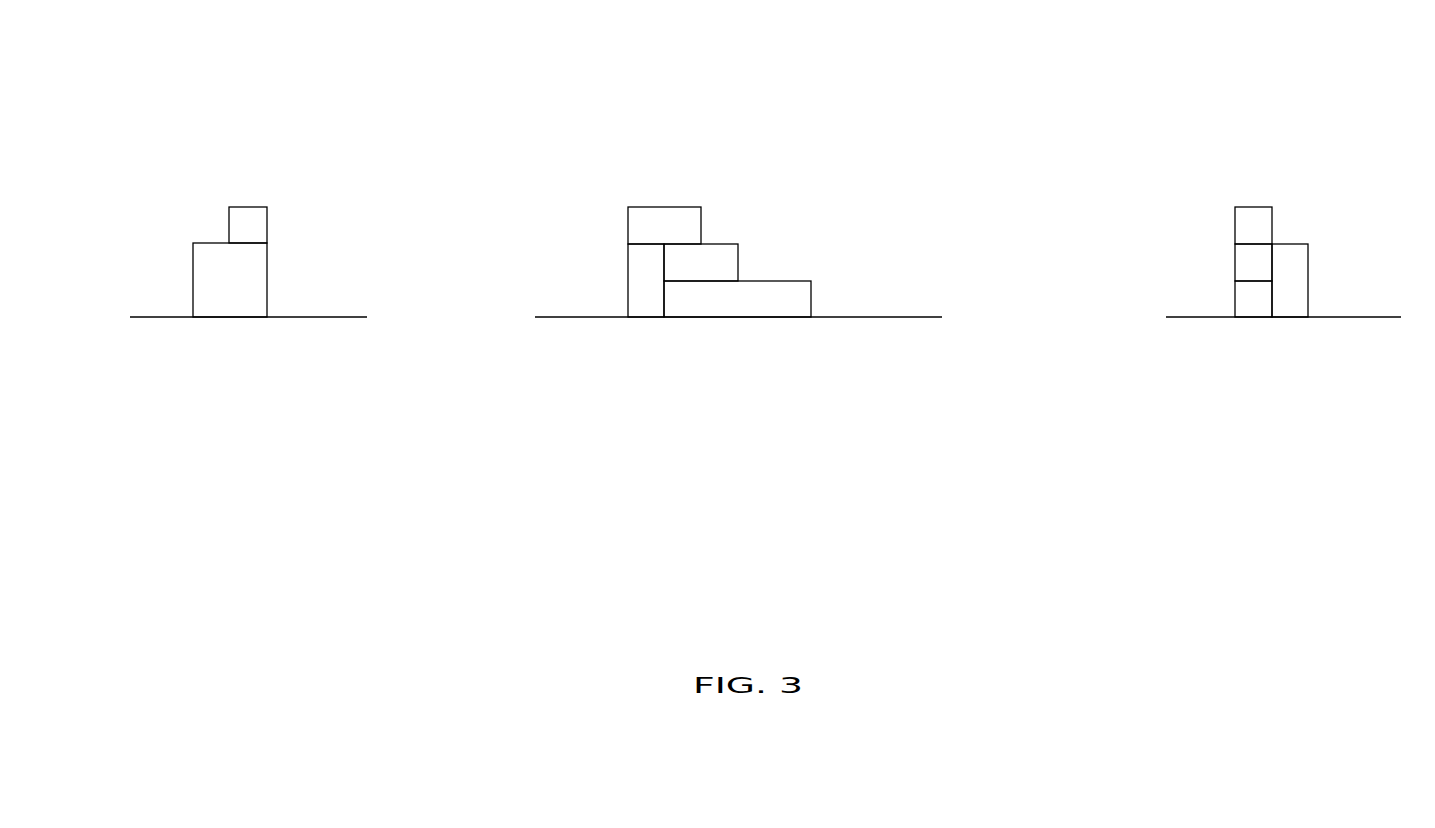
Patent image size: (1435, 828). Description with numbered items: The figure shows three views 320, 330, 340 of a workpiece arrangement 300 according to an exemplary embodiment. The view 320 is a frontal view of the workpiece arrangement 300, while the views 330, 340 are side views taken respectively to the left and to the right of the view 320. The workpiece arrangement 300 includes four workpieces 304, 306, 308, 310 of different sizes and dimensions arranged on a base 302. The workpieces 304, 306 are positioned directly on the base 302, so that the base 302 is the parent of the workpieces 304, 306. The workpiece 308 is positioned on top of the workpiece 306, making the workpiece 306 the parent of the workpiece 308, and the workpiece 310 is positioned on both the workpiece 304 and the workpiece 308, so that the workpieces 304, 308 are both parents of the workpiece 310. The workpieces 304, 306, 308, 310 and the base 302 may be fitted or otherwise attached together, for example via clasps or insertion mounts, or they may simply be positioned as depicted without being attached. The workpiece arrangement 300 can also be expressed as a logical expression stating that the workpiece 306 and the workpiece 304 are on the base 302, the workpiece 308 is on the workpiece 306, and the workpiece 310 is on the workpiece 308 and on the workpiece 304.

The workpiece arrangement 300 is at (341, 190).
The base 302 is at (300, 317).
The workpiece 304 is at (193, 277).
The workpiece 306 is at (807, 280).
The workpiece 308 is at (730, 244).
The workpiece 310 is at (250, 207).
The view 320 is at (548, 113).
The view 330 is at (91, 112).
The view 340 is at (1113, 113).